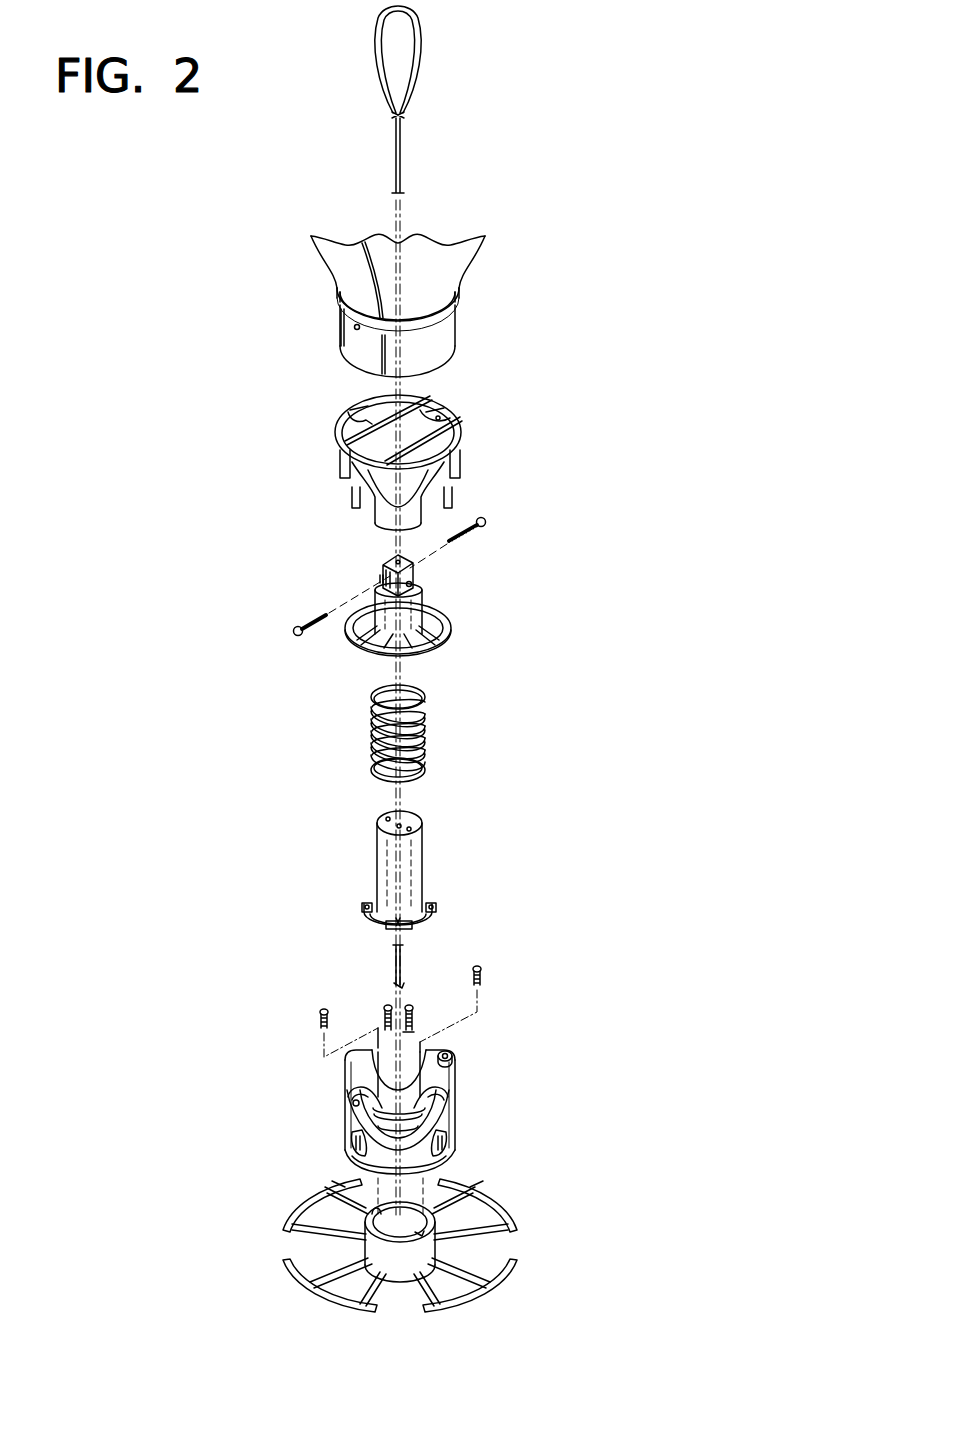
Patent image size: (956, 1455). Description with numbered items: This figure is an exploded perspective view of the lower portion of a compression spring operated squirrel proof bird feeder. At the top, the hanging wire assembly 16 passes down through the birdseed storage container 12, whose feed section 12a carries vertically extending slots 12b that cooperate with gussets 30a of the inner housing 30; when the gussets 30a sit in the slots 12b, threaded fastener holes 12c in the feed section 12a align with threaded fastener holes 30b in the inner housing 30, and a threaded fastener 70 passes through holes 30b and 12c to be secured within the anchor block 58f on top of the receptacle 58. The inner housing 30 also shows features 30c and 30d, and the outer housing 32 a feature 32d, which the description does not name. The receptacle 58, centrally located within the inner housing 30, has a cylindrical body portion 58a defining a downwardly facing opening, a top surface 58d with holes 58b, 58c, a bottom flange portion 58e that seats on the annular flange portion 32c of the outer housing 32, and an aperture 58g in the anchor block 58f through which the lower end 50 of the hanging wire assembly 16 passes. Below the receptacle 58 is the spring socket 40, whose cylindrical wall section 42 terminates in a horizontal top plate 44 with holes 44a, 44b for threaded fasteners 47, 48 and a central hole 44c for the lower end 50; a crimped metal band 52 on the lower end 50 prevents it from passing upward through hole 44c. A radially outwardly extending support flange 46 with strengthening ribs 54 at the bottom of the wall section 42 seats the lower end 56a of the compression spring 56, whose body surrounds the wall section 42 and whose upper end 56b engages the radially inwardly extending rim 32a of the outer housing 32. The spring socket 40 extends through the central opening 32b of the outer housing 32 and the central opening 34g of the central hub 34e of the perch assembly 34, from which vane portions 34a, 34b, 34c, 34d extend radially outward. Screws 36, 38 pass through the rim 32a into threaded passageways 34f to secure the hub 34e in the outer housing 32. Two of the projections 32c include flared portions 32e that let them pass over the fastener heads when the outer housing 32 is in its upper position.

The birdseed storage container 12 is at (414, 305).
The feed section 12a is at (450, 330).
The vertically extending slots 12b is at (341, 312).
The threaded fastener holes 12c is at (356, 329).
The hanging wire assembly 16 is at (422, 148).
The inner housing 30 is at (401, 451).
The gussets 30a is at (445, 433).
The threaded fastener holes 30b is at (424, 406).
The housing legs 30c is at (455, 468).
The housing leg tips 30d is at (453, 497).
The receptacle 58 is at (383, 598).
The cylindrical body portion 58a is at (413, 612).
The hole 58b is at (385, 567).
The hole 58c is at (412, 584).
The top surface 58d is at (380, 578).
The bottom flange portion 58e is at (353, 640).
The anchor block 58f is at (428, 572).
The aperture 58g is at (396, 560).
The threaded fastener 70 is at (294, 630).
The compression spring 56 is at (455, 733).
The lower end of spring 56a is at (426, 775).
The upper end of spring 56b is at (428, 690).
The spring socket 40 is at (422, 889).
The cylindrical wall section 42 is at (378, 853).
The horizontal top plate 44 is at (413, 820).
The hole 44a is at (388, 819).
The hole 44b is at (411, 830).
The central hole 44c is at (397, 827).
The support flange 46 is at (422, 922).
The radially extending ribs 54 is at (367, 907).
The lower end of hanging wire assembly 50 is at (394, 960).
The crimped metal band 52 is at (404, 984).
The threaded fastener 47 is at (386, 1017).
The screw 36 is at (318, 1016).
The screw 38 is at (482, 978).
The threaded fastener 48 is at (418, 1030).
The outer housing 32 is at (409, 1111).
The radially inwardly extending rim 32a is at (430, 1100).
The central opening 32b is at (347, 1100).
The projections 32c is at (452, 1120).
The housing slots 32d is at (447, 1143).
The flared portions 32e is at (453, 1054).
The perch assembly 34 is at (440, 1240).
The vane portion 34a is at (288, 1228).
The vane portion 34b is at (288, 1264).
The vane portion 34c is at (475, 1303).
The vane portion 34d is at (475, 1188).
The central hub 34e is at (335, 1300).
The threaded passageways 34f is at (345, 1190).
The central opening 34g is at (422, 1230).